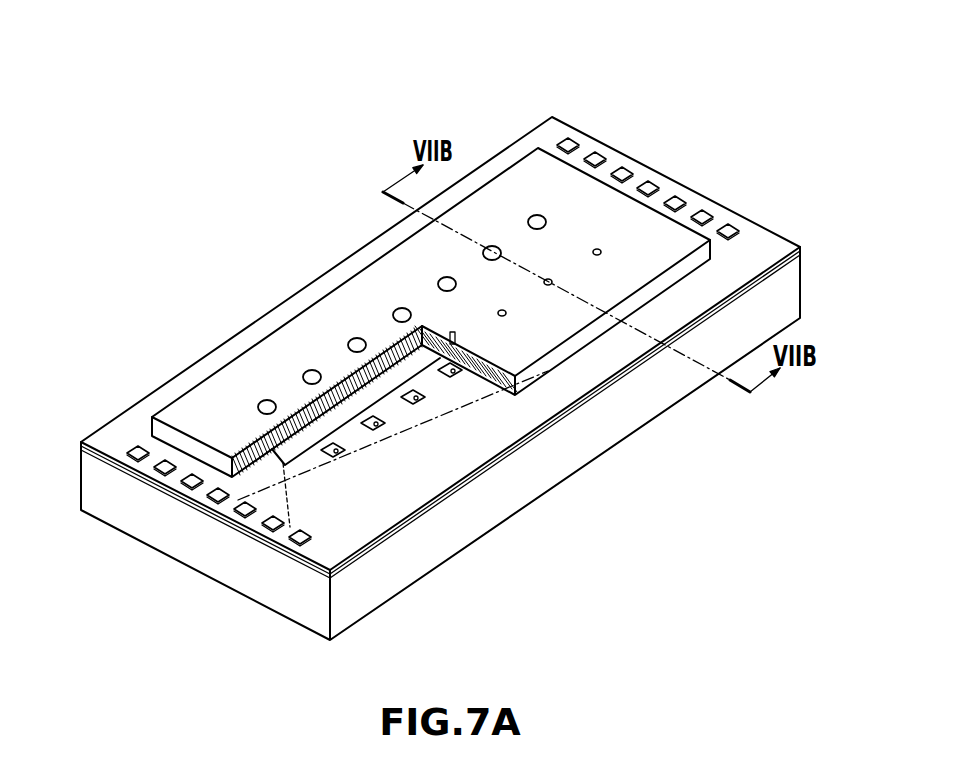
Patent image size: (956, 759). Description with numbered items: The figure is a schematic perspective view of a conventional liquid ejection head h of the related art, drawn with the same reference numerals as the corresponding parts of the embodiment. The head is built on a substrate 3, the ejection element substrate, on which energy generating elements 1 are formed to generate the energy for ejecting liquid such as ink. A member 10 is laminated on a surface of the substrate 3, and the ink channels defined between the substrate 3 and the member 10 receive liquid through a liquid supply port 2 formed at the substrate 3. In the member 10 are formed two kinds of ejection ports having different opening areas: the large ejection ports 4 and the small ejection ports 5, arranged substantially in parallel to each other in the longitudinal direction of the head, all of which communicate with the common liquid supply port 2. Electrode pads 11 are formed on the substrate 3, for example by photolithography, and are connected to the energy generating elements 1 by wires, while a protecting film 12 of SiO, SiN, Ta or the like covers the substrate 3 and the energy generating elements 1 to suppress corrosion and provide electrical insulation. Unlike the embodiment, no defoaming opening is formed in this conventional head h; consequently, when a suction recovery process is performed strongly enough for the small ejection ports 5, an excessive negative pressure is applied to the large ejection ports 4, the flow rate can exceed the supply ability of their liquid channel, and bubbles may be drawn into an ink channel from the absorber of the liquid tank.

The energy generating element 1 is at (335, 443).
The liquid supply port 2 is at (302, 447).
The substrate 3 is at (636, 410).
The large ejection port 4 is at (259, 404).
The small ejection port 5 is at (596, 248).
The member 10 is at (272, 348).
The electrode pad 11 is at (117, 465).
The protecting film 12 is at (776, 251).
The conventional liquid ejection head h is at (680, 137).